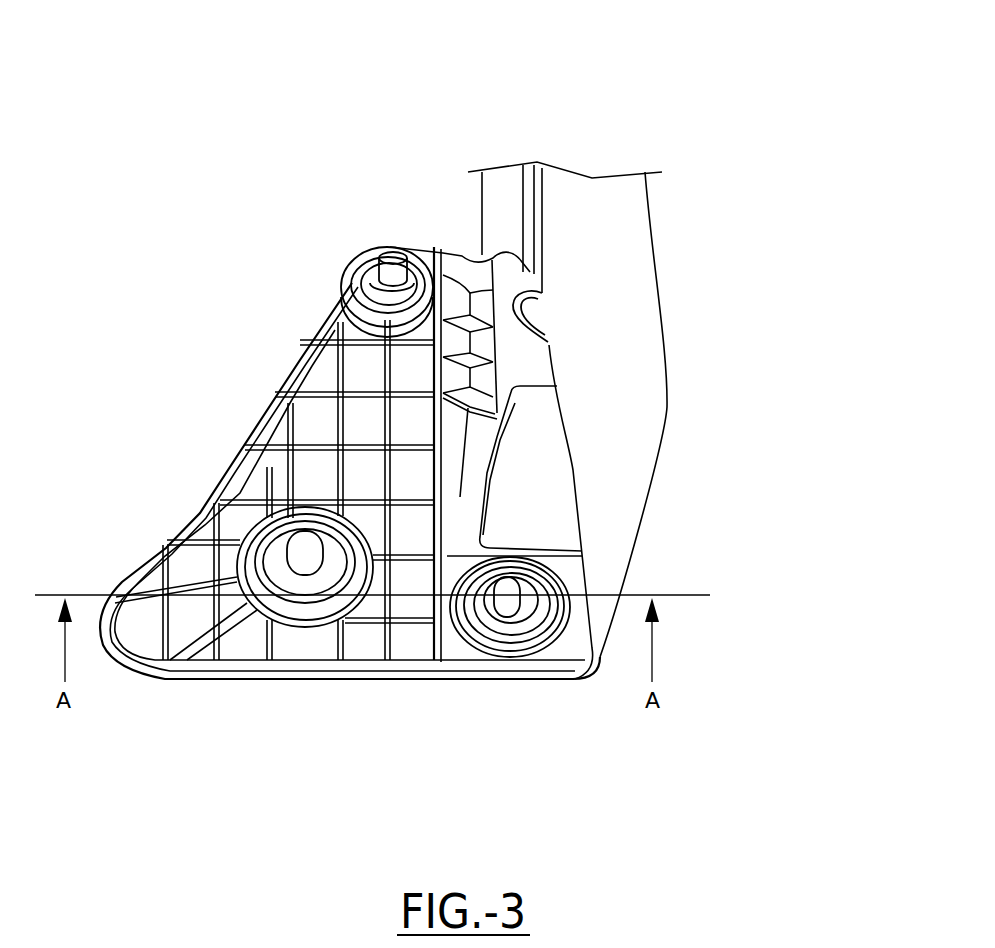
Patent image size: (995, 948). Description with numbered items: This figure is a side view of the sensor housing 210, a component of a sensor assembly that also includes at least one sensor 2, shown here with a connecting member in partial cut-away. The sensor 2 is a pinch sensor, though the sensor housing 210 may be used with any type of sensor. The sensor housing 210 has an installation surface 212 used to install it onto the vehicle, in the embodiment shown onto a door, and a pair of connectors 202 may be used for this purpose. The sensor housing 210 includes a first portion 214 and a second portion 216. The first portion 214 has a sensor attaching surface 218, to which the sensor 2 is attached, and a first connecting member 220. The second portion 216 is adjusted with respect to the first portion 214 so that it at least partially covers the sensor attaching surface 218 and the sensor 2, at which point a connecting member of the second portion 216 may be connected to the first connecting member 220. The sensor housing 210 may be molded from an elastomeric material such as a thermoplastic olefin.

The sensor 2 is at (548, 300).
The connectors 202 is at (390, 260).
The sensor housing 210 is at (738, 90).
The installation surface 212 is at (347, 298).
The first portion 214 is at (186, 635).
The second portion 216 is at (552, 527).
The sensor attaching surface 218 is at (553, 344).
The first connecting member 220 is at (507, 587).